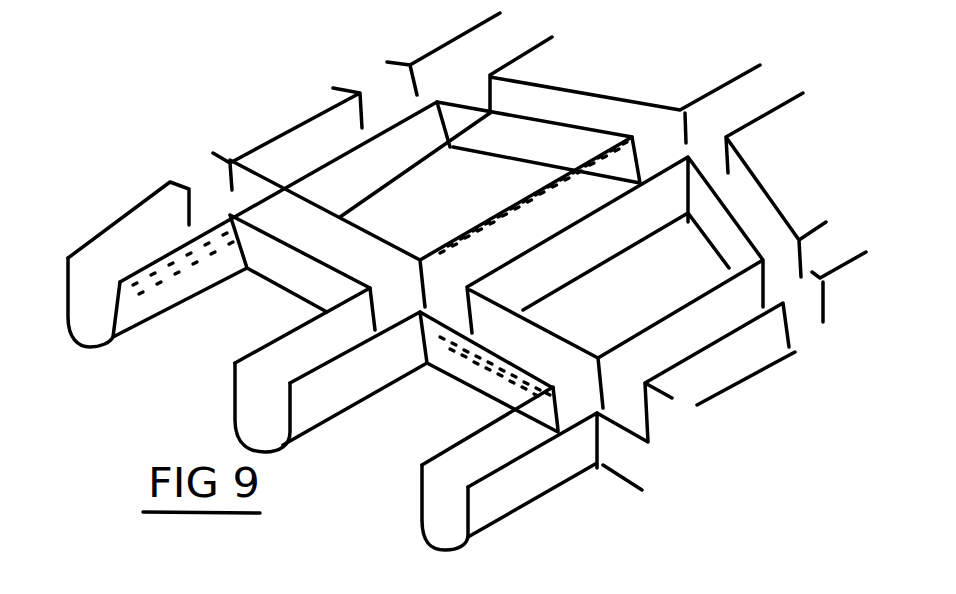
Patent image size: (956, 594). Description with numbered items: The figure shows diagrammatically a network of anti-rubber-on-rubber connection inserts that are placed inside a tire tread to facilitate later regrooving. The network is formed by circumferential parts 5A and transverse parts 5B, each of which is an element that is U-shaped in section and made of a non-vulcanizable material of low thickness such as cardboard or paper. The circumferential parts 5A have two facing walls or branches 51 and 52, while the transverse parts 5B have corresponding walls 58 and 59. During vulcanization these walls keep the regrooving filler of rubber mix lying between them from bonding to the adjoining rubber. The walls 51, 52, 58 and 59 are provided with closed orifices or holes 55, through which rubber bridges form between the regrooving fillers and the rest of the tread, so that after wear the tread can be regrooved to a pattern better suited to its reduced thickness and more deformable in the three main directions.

The branch 51 is at (68, 305).
The branch 52 is at (330, 395).
The circumferential part 5A is at (143, 302).
The transverse part 5B is at (372, 80).
The closed orifices or holes 55 is at (190, 252).
The wall 58 is at (388, 228).
The wall 59 is at (563, 143).